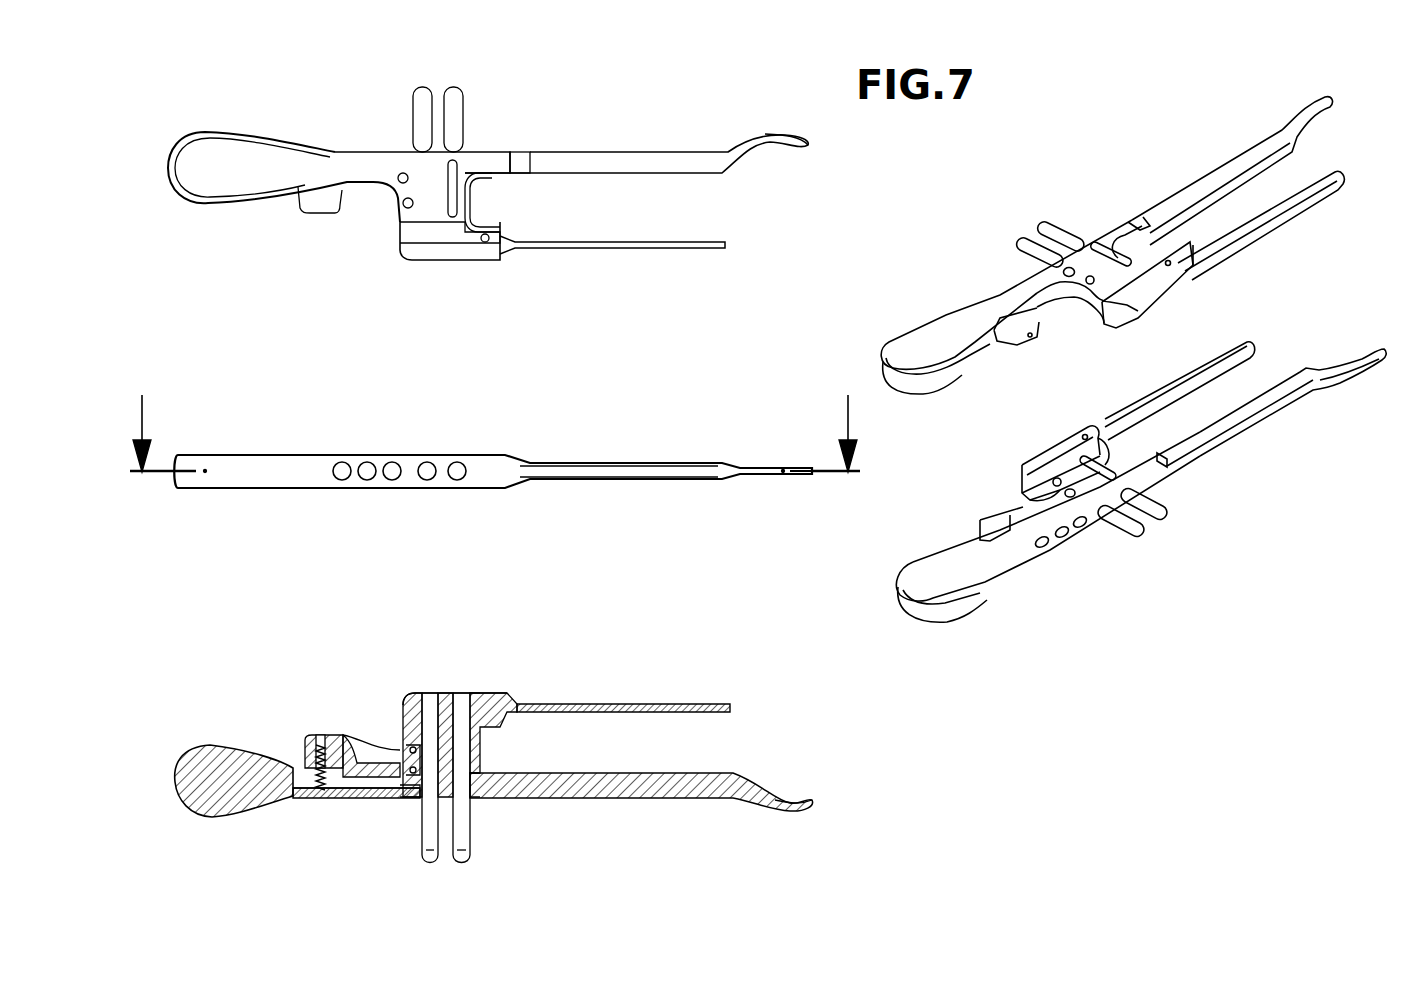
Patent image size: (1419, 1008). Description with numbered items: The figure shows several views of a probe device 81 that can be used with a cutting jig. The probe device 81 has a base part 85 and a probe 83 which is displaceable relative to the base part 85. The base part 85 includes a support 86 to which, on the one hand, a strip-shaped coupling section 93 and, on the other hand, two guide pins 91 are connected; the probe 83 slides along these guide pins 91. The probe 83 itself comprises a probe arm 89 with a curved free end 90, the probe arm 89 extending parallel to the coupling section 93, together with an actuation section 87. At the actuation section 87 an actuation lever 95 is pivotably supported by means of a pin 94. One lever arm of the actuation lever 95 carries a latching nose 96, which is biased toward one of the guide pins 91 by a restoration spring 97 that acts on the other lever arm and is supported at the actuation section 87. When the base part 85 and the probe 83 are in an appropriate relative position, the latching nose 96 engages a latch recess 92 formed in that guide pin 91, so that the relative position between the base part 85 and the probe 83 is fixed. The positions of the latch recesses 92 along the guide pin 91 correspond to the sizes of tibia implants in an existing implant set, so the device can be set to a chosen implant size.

The probe device 81 is at (572, 112).
The probe 83 is at (335, 145).
The base part 85 is at (410, 262).
The support 86 is at (468, 695).
The actuation section 87 is at (320, 808).
The probe arm 89 is at (640, 157).
The curved free end 90 is at (773, 147).
The guide pin 91 is at (428, 103).
The latch recess 92 is at (415, 790).
The coupling section 93 is at (616, 249).
The pin 94 is at (410, 758).
The actuation lever 95 is at (310, 205).
The latching nose 96 is at (424, 695).
The restoration spring 97 is at (310, 770).